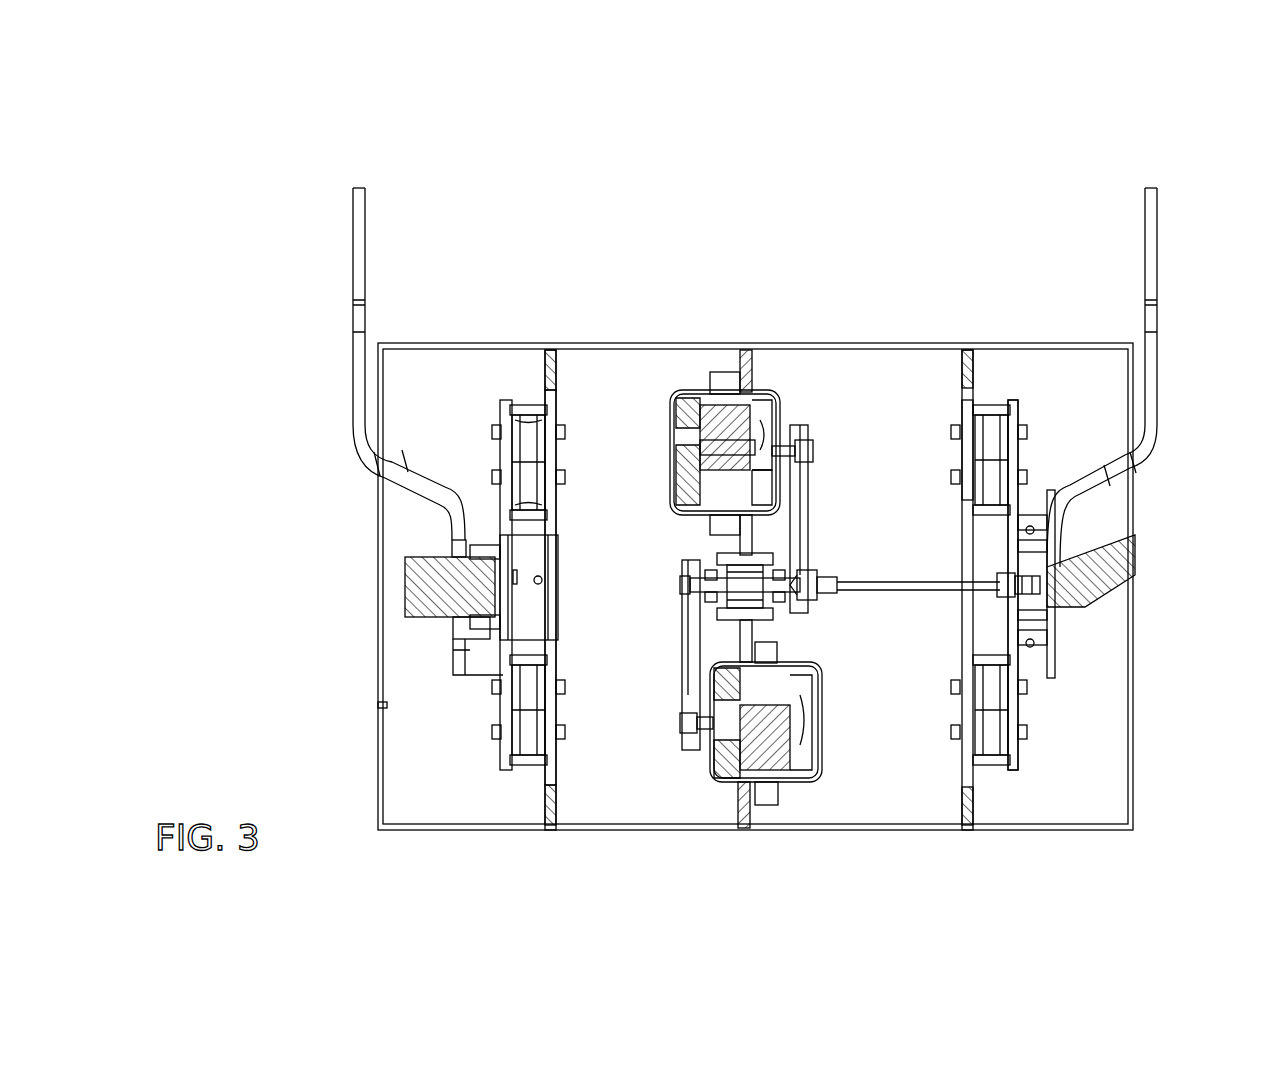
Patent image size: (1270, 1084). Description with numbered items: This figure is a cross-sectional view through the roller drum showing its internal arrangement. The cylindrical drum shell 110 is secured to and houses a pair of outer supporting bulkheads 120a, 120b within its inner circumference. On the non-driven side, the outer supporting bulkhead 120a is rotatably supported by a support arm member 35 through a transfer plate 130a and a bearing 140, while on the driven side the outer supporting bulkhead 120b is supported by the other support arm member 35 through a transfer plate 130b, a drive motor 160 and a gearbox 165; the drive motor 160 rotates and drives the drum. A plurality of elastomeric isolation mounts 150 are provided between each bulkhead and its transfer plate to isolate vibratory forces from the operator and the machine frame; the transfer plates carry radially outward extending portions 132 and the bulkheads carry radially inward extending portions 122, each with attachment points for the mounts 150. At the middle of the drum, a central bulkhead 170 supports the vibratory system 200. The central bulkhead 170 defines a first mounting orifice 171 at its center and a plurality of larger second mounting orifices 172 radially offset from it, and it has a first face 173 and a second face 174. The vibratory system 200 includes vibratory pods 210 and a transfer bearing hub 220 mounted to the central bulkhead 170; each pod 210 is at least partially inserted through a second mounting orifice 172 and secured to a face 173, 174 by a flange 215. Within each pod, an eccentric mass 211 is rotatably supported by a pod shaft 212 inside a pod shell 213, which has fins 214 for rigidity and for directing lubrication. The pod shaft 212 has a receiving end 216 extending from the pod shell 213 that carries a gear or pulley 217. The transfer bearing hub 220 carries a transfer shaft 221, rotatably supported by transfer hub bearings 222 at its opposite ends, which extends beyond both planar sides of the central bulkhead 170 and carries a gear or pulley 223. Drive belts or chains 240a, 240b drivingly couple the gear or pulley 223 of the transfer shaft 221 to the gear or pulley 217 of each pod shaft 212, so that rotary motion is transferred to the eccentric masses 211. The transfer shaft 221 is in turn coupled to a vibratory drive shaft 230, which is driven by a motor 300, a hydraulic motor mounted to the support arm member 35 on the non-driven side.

The support arm member 35 is at (358, 243).
The cylindrical drum shell 110 is at (1020, 343).
The outer supporting bulkhead 120a is at (972, 807).
The outer supporting bulkhead 120b is at (550, 792).
The radially inward extending portion 122 is at (962, 440).
The transfer plate 130a is at (1016, 717).
The transfer plate 130b is at (503, 672).
The radially outward extending portion 132 is at (1017, 458).
The bearing 140 is at (1038, 638).
The elastomeric isolation mount 150 is at (533, 415).
The drive motor 160 is at (405, 593).
The gearbox 165 is at (527, 550).
The central bulkhead 170 is at (744, 788).
The first mounting orifice 171 is at (740, 617).
The second mounting orifice 172 is at (742, 797).
The first face 173 is at (732, 358).
The second face 174 is at (760, 368).
The vibratory system 200 is at (880, 752).
The vibratory pod 210 is at (784, 392).
The eccentric mass 211 is at (730, 430).
The pod shaft 212 is at (735, 448).
The pod shell 213 is at (672, 415).
The fin 214 is at (778, 415).
The flange 215 is at (705, 390).
The receiving end 216 is at (832, 455).
The gear or pulley 217 is at (800, 445).
The transfer bearing hub 220 is at (710, 555).
The transfer shaft 221 is at (755, 595).
The transfer hub bearing 222 is at (795, 560).
The gear or pulley 223 is at (718, 578).
The vibratory drive shaft 230 is at (920, 596).
The drive belt 240a is at (806, 518).
The drive belt 240b is at (692, 645).
The motor 300 is at (1137, 555).